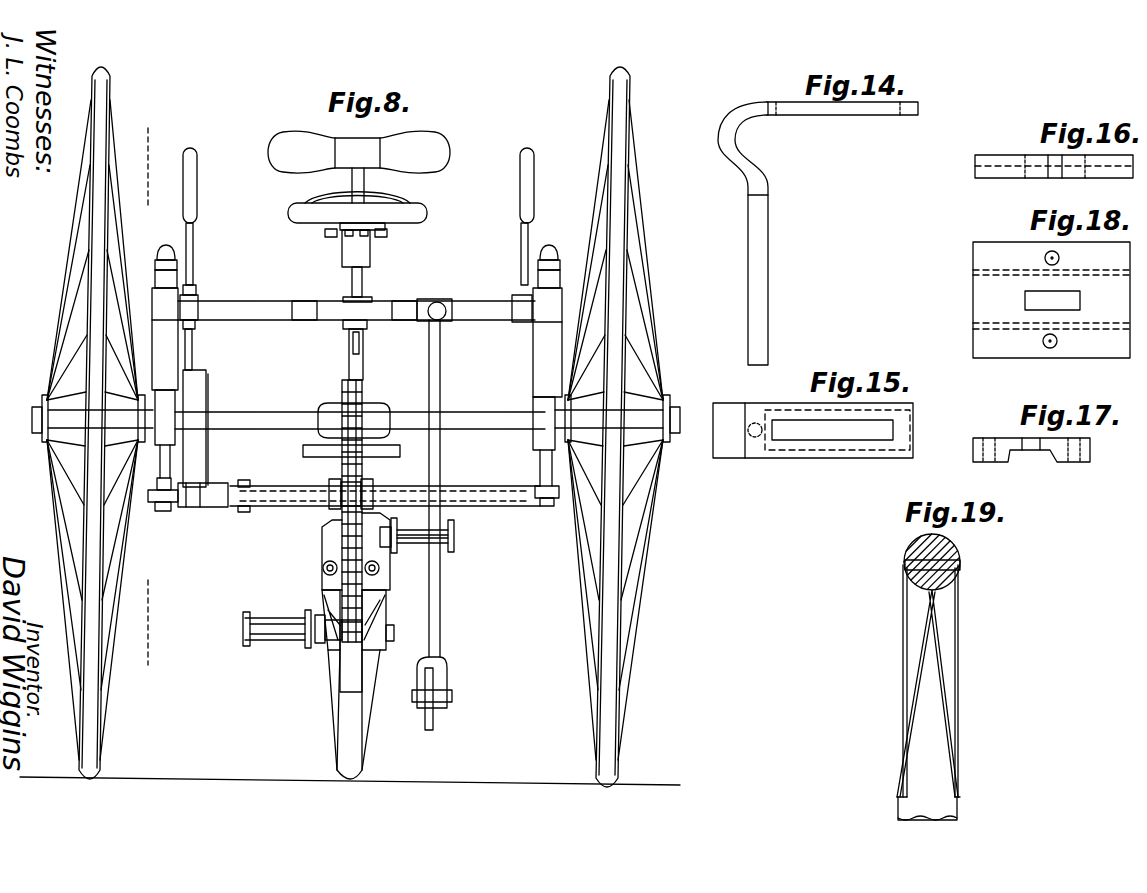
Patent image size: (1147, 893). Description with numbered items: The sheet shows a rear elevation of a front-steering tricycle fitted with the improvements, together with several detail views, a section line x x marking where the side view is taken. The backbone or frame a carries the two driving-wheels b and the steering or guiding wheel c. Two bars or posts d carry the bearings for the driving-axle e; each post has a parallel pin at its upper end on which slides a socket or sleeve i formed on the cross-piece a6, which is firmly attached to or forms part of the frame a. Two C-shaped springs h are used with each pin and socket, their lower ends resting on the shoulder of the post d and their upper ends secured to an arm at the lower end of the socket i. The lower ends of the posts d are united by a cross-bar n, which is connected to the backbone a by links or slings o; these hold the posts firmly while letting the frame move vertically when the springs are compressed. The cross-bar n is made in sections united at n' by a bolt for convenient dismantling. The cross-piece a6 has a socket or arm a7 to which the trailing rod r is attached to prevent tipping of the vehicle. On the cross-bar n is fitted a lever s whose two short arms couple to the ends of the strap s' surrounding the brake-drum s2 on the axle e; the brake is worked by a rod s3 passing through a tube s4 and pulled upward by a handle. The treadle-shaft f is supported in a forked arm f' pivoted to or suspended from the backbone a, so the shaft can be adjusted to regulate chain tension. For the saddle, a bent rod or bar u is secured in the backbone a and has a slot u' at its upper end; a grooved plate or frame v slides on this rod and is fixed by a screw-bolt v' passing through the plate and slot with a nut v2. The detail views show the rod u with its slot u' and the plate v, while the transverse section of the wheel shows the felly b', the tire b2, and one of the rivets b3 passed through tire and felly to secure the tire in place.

In FIG. 8, the driving-wheel b is at (356, 427).
In FIG. 8, the section line x is at (146, 399).
In FIG. 8, the tube s4 is at (193, 240).
In FIG. 8, the rod s3 is at (192, 350).
In FIG. 8, the brake-drum s2 is at (208, 392).
In FIG. 8, the strap s' is at (194, 428).
In FIG. 8, the lever s is at (203, 495).
In FIG. 8, the socket i is at (357, 321).
In FIG. 8, the spring h is at (354, 354).
In FIG. 8, the post d is at (353, 450).
In FIG. 8, the cross-piece a6 is at (356, 307).
In FIG. 8, the socket or arm a7 is at (440, 302).
In FIG. 8, the backbone or frame a is at (363, 368).
In FIG. 8, the driving-axle e is at (360, 430).
In FIG. 8, the cross-bar n is at (385, 509).
In FIG. 8, the joint n' is at (248, 483).
In FIG. 8, the links or slings o is at (333, 479).
In FIG. 8, the treadle-shaft f is at (348, 583).
In FIG. 8, the forked arm f' is at (349, 511).
In FIG. 8, the steering or guiding wheel c is at (358, 684).
In FIG. 8, the trailing rod r is at (440, 372).
In FIG. 8, the bent rod or bar u is at (368, 266).
In FIG. 14, the bent rod or bar u is at (755, 233).
In FIG. 15, the bent rod or bar u is at (813, 419).
In FIG. 14, the slot u' is at (842, 121).
In FIG. 15, the slot u' is at (837, 430).
In FIG. 8, the grooved plate or frame v is at (359, 188).
In FIG. 16, the grooved plate or frame v is at (1054, 155).
In FIG. 18, the grooved plate or frame v is at (1051, 300).
In FIG. 17, the grooved plate or frame v is at (1031, 441).
In FIG. 8, the screw-bolt v' is at (336, 244).
In FIG. 8, the nut v2 is at (368, 236).
In FIG. 19, the felly b' is at (942, 692).
In FIG. 19, the tire b2 is at (950, 543).
In FIG. 19, the rivet b3 is at (912, 556).